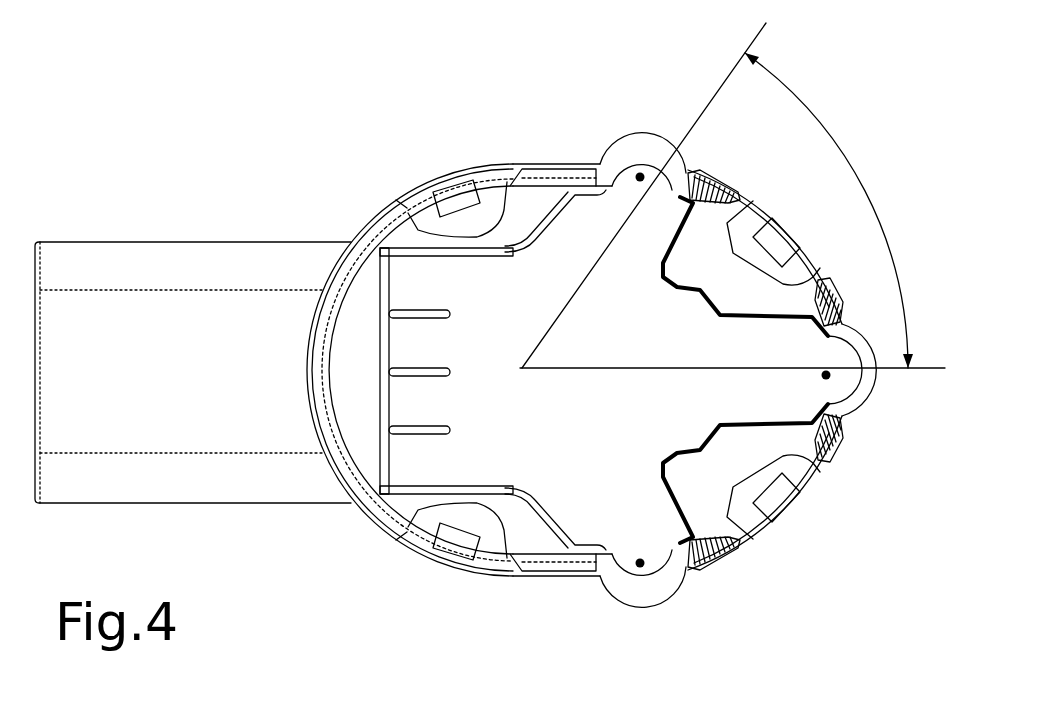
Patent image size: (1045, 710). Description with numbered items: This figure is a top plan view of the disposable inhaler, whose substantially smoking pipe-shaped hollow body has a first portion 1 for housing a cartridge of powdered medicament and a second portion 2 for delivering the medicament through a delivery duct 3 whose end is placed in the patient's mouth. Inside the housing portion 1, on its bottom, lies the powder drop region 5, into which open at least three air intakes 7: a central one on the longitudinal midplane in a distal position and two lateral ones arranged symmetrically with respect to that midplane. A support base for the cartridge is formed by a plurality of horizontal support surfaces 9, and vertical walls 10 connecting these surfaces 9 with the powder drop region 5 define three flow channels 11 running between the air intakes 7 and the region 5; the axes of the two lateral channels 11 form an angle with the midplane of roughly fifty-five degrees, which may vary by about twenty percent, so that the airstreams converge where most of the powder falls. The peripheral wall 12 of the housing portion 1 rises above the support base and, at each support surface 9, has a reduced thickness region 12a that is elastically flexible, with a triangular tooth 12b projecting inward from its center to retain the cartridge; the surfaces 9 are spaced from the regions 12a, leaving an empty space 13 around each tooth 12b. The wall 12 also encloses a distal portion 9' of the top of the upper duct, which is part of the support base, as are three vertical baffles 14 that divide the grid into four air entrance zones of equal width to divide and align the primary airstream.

The first portion 1 is at (661, 104).
The second portion 2 is at (123, 204).
The delivery duct 3 is at (258, 243).
The powder drop region 5 is at (732, 215).
The air intakes 7 is at (638, 175).
The horizontal support surfaces 9 is at (649, 354).
The distal portion of the top of the upper duct 9' is at (382, 373).
The vertical walls 10 is at (517, 220).
The flow channels 11 is at (648, 232).
The peripheral wall 12 is at (357, 507).
The reduced thickness region 12a is at (407, 193).
The triangular tooth 12b is at (447, 197).
The empty space 13 is at (437, 192).
The vertical baffles 14 is at (430, 423).